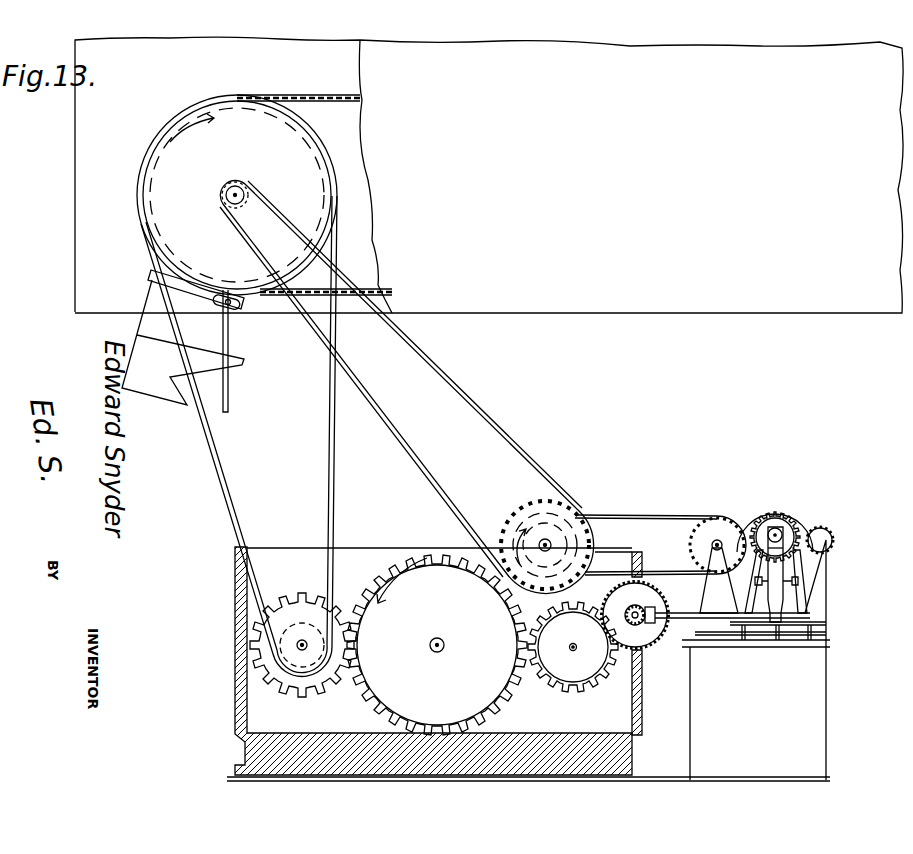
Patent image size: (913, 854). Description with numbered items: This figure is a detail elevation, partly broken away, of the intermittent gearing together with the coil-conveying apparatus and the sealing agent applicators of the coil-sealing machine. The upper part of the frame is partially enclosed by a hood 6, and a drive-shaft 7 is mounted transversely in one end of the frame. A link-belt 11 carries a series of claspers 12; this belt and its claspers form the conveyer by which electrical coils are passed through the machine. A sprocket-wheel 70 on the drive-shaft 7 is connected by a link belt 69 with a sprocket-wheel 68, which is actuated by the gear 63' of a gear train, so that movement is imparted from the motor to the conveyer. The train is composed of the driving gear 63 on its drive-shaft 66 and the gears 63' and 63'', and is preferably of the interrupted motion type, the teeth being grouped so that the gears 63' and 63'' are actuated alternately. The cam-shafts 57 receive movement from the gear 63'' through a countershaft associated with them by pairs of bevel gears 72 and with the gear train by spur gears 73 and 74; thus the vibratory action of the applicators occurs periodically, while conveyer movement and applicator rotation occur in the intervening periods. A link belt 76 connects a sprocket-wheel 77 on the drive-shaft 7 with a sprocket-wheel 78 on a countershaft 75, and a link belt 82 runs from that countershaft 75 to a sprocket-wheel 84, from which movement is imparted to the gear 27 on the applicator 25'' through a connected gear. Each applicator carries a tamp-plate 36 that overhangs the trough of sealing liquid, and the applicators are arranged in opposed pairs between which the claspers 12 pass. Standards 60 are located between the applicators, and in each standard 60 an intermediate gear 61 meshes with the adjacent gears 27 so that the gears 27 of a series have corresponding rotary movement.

The hood 6 is at (746, 313).
The drive-shaft 7 is at (244, 206).
The link-belt 11 is at (322, 99).
The clasper 12 is at (138, 326).
The applicator 25'' is at (756, 660).
The gear 27 is at (770, 520).
The tamp-plate 36 is at (805, 514).
The cam-shaft 57 is at (683, 611).
The standard 60 is at (719, 580).
The intermediate gear 61 is at (830, 532).
The driving gear 63 is at (437, 645).
The gear 63' is at (358, 600).
The gear 63'' is at (573, 667).
The drive-shaft 66 is at (442, 639).
The sprocket-wheel 68 is at (298, 660).
The link belt 69 is at (240, 494).
The sprocket-wheel 70 is at (237, 195).
The bevel gears 72 is at (642, 633).
The spur gear 73 is at (618, 600).
The spur gear 74 is at (572, 654).
The countershaft 75 is at (545, 547).
The link belt 76 is at (458, 397).
The sprocket-wheel 77 is at (242, 186).
The sprocket-wheel 78 is at (521, 507).
The link belt 82 is at (632, 515).
The sprocket-wheel 84 is at (717, 545).